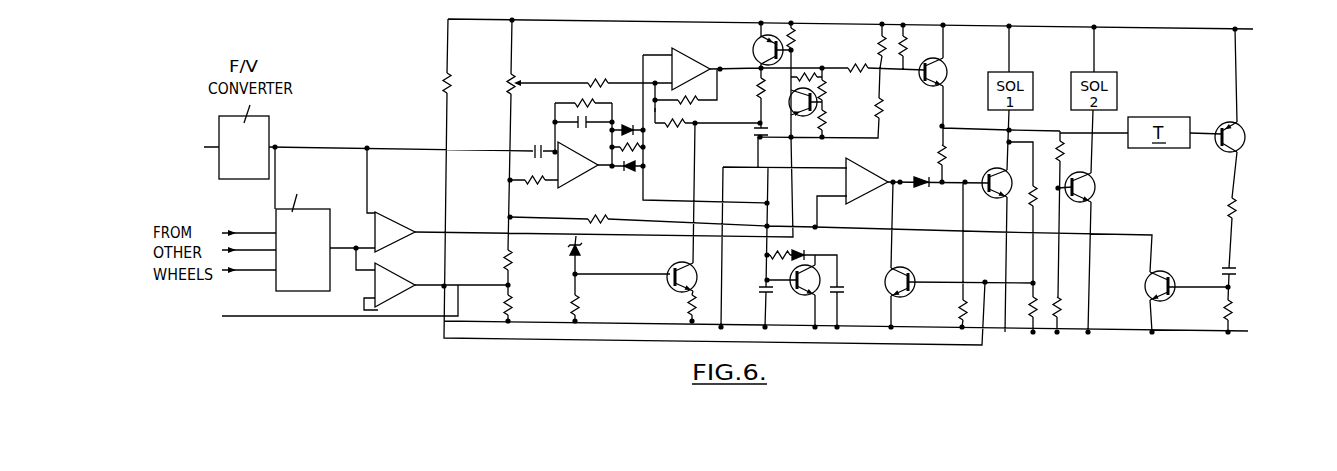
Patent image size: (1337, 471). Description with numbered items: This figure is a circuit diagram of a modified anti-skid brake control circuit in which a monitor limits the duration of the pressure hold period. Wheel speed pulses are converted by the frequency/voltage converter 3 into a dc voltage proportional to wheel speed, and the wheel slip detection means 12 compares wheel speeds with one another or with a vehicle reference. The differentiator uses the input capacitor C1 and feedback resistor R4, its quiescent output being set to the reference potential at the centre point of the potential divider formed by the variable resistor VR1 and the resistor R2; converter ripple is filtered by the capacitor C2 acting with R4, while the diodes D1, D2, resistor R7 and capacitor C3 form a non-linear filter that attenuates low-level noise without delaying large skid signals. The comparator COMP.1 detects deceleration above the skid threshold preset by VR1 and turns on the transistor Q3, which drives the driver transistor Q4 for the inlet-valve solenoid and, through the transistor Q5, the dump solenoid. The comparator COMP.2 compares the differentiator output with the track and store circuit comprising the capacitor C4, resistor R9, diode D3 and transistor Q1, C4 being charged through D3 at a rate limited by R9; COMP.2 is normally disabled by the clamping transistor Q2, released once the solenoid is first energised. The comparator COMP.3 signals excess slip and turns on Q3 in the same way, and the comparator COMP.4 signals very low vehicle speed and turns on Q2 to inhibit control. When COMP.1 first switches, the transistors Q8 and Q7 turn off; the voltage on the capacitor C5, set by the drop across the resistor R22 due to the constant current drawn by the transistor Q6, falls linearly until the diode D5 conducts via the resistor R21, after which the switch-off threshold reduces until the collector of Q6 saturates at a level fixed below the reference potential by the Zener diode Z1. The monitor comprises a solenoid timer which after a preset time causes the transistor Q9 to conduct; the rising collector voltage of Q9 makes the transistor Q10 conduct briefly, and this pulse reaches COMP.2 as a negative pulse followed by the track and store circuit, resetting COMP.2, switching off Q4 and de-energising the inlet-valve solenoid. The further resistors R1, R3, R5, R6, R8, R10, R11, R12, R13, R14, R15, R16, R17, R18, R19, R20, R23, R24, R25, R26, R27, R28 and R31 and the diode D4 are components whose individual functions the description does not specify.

The frequency/voltage converter 3 is at (253, 157).
The wheel slip detection means 12 is at (337, 305).
The resistor R1 is at (432, 86).
The variable resistor VR1 is at (493, 88).
The potential divider resistor R2 is at (493, 261).
The resistor R3 is at (531, 170).
The feedback resistor R4 is at (582, 100).
The resistor R5 is at (595, 72).
The resistor R6 is at (662, 84).
The non-linear filter resistor R7 is at (633, 147).
The resistor R8 is at (595, 207).
The charging resistor R9 is at (772, 254).
The resistor R10 is at (858, 59).
The resistor R11 is at (864, 40).
The resistor R12 is at (923, 45).
The resistor R13 is at (961, 155).
The resistor R14 is at (958, 312).
The resistor R15 is at (1037, 202).
The resistor R16 is at (1025, 302).
The resistor R17 is at (882, 103).
The resistor R18 is at (527, 306).
The resistor R19 is at (595, 306).
The resistor R20 is at (673, 308).
The diode series resistor R21 is at (675, 132).
The current-setting resistor R22 is at (758, 86).
The resistor R23 is at (810, 39).
The resistor R24 is at (831, 81).
The resistor R25 is at (841, 94).
The resistor R26 is at (841, 123).
The resistor R27 is at (1065, 147).
The resistor R28 is at (1060, 310).
The resistor R31 is at (1251, 207).
The input capacitor C1 is at (537, 141).
The filter capacitor C2 is at (584, 131).
The non-linear filter capacitor C3 is at (751, 289).
The track and store capacitor C4 is at (851, 295).
The timing capacitor C5 is at (746, 133).
The non-linear filter diode D1 is at (628, 119).
The non-linear filter diode D2 is at (626, 176).
The charging diode D3 is at (800, 253).
The diode D4 is at (918, 170).
The threshold diode D5 is at (660, 108).
The Zener diode Z1 is at (588, 254).
The track and store transistor Q1 is at (801, 291).
The clamping transistor Q2 is at (904, 293).
The OR gate transistor Q3 is at (949, 72).
The driver transistor Q4 is at (990, 195).
The dump solenoid drive transistor Q5 is at (1092, 197).
The constant current source transistor Q6 is at (664, 282).
The switching transistor Q7 is at (751, 51).
The switching transistor Q8 is at (808, 127).
The timer output transistor Q9 is at (1242, 147).
The reset pulse transistor Q10 is at (1172, 296).
The integrated circuit comparator COMP.1 is at (703, 44).
The integrated circuit comparator COMP.2 is at (864, 183).
The wheel slip comparator COMP.3 is at (403, 205).
The low speed comparator COMP.4 is at (400, 288).